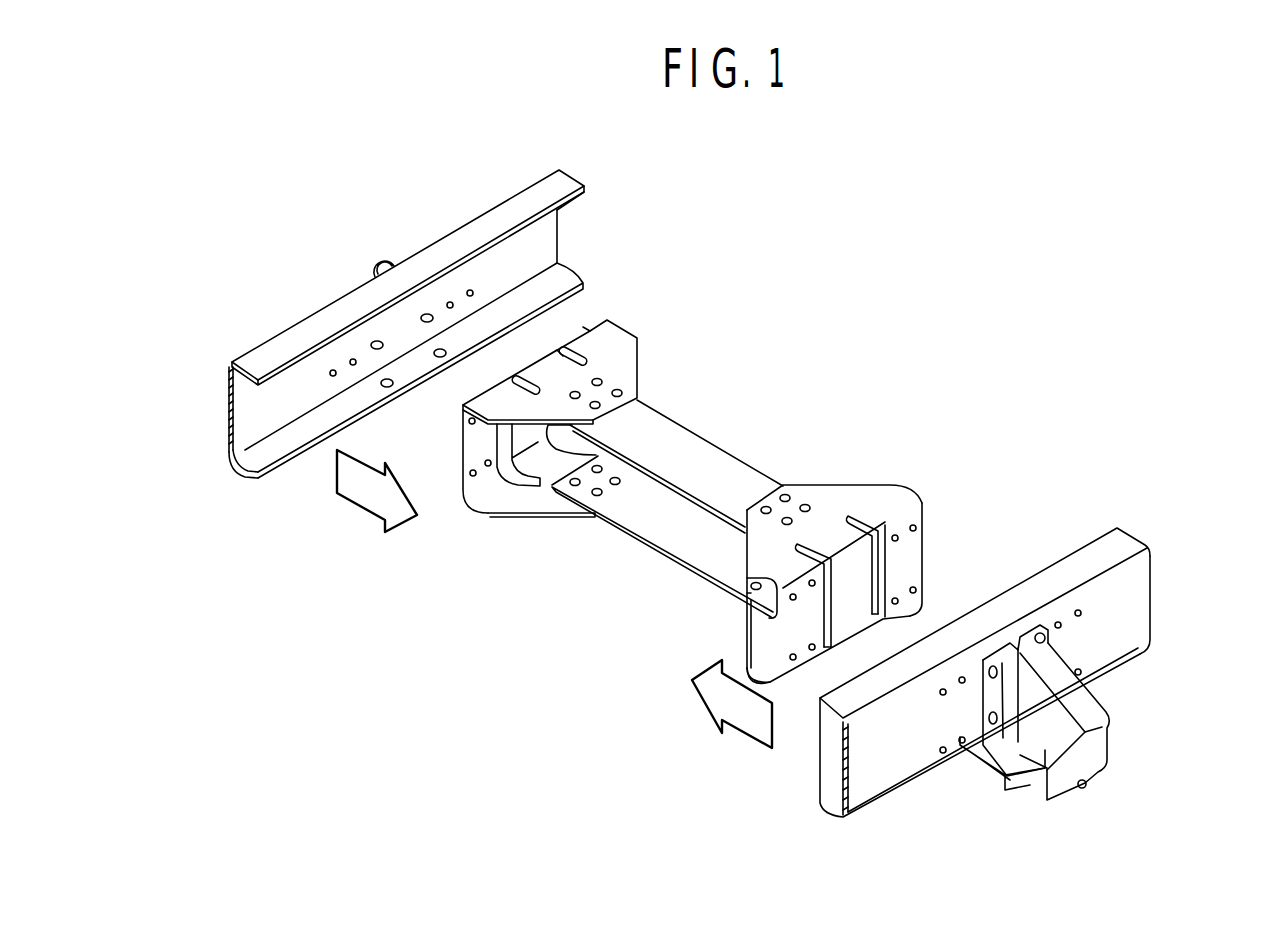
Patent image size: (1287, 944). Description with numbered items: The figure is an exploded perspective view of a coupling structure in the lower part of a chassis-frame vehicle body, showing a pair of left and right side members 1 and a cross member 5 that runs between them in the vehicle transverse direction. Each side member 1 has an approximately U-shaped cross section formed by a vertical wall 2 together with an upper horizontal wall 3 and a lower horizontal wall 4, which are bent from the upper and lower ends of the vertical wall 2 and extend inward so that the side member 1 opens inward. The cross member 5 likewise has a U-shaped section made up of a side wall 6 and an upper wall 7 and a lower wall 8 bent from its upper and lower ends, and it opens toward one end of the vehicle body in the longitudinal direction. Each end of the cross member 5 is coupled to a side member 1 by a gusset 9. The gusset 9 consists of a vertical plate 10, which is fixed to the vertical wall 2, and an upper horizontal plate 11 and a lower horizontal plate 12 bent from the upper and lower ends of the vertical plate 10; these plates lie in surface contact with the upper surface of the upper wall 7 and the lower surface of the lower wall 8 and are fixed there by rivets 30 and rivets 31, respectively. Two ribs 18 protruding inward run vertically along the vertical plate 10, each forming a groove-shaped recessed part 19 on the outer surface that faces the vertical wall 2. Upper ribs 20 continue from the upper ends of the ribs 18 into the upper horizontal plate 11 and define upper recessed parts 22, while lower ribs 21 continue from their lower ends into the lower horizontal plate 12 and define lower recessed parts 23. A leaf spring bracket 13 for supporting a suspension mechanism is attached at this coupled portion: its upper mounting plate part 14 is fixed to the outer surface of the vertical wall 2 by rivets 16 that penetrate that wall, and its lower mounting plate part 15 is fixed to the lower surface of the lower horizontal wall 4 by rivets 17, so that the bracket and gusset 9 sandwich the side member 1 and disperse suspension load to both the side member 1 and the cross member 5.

The side member 1 is at (513, 188).
The vertical wall 2 is at (548, 235).
The upper horizontal wall 3 is at (272, 343).
The lower horizontal wall 4 is at (282, 450).
The cross member 5 is at (740, 446).
The side wall 6 is at (745, 462).
The upper wall 7 is at (695, 443).
The lower wall 8 is at (670, 540).
The gusset 9 is at (627, 326).
The vertical plate 10 is at (472, 456).
The upper horizontal plate 11 is at (633, 338).
The lower horizontal plate 12 is at (490, 500).
The leaf spring bracket 13 is at (379, 256).
The upper mounting plate part 14 is at (1040, 632).
The lower mounting plate part 15 is at (963, 768).
The rivet 16 is at (377, 341).
The rivet 17 is at (435, 370).
The rib 18 is at (482, 500).
The recessed part 19 is at (777, 603).
The upper rib 20 is at (507, 383).
The lower rib 21 is at (560, 435).
The upper recessed part 22 is at (570, 352).
The lower recessed part 23 is at (828, 652).
The rivet 30 is at (597, 404).
The rivet 31 is at (592, 453).